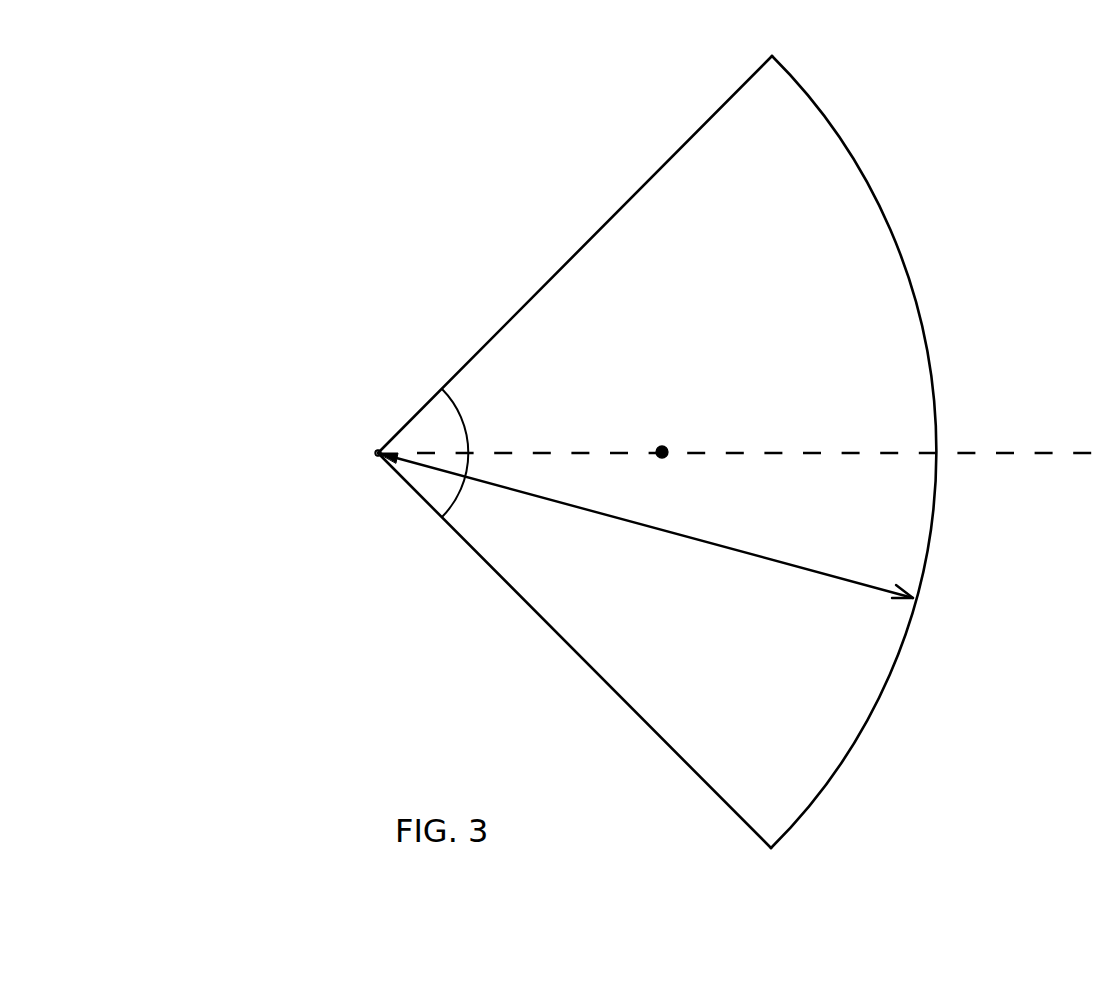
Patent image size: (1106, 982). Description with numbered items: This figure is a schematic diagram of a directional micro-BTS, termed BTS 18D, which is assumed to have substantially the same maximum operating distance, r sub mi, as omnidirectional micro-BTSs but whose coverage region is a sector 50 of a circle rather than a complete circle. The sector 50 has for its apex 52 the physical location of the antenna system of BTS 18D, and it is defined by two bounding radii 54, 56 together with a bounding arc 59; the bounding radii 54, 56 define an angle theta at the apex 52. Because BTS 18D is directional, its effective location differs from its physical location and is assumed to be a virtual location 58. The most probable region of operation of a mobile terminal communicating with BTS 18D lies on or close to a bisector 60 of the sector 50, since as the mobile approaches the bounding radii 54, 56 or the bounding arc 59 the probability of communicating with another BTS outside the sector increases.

The directional micro-BTS 18D is at (376, 453).
The sector 50 is at (588, 318).
The apex 52 is at (378, 453).
The bounding radius 54 is at (655, 170).
The bounding radius 56 is at (565, 642).
The virtual location 58 is at (662, 452).
The bounding arc 59 is at (893, 242).
The bisector 60 is at (1007, 453).